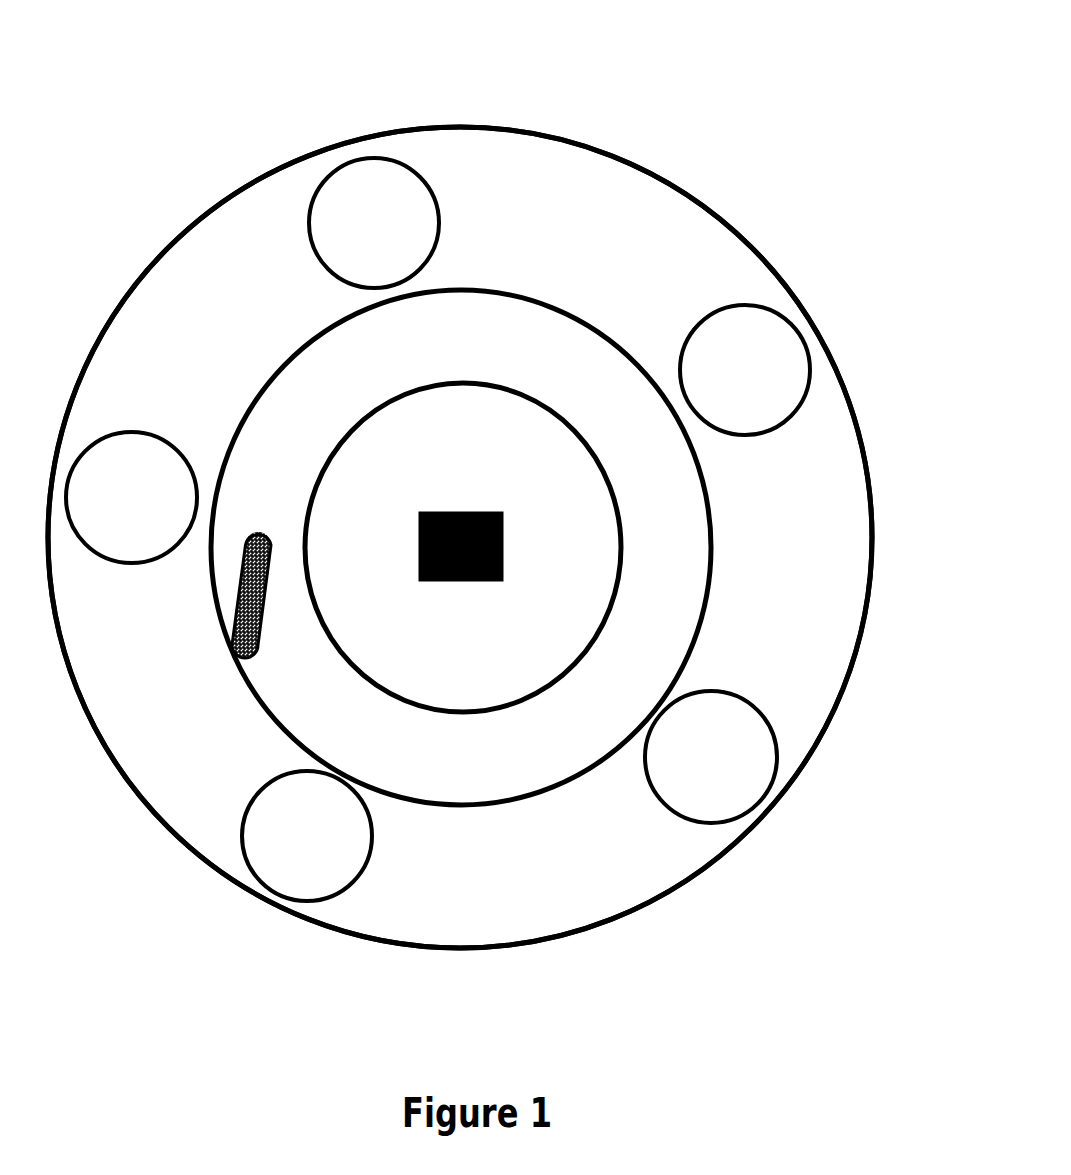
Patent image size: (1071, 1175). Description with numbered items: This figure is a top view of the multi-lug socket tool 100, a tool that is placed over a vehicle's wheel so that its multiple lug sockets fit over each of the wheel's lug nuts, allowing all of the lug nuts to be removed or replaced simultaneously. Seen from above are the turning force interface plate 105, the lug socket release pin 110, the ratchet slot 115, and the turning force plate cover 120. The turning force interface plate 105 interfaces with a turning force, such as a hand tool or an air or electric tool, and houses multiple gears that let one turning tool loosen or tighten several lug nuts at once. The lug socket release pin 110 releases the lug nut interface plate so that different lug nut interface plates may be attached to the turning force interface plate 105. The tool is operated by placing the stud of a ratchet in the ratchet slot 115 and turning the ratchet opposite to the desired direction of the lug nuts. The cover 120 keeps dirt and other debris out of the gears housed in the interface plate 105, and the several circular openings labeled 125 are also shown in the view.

The multi-lug socket tool 100 is at (698, 115).
The turning force interface plate 105 is at (162, 255).
The lug socket release pin 110 is at (237, 593).
The ratchet slot 115 is at (468, 512).
The turning force plate cover 120 is at (468, 892).
The test sites 125 is at (357, 232).